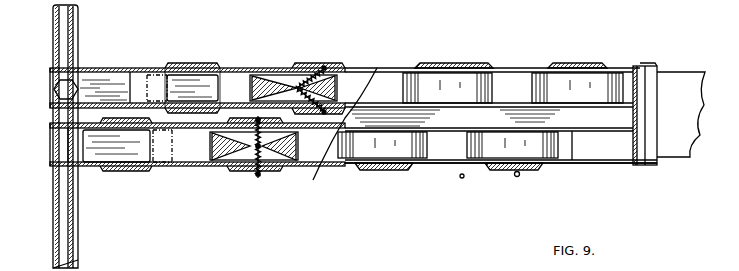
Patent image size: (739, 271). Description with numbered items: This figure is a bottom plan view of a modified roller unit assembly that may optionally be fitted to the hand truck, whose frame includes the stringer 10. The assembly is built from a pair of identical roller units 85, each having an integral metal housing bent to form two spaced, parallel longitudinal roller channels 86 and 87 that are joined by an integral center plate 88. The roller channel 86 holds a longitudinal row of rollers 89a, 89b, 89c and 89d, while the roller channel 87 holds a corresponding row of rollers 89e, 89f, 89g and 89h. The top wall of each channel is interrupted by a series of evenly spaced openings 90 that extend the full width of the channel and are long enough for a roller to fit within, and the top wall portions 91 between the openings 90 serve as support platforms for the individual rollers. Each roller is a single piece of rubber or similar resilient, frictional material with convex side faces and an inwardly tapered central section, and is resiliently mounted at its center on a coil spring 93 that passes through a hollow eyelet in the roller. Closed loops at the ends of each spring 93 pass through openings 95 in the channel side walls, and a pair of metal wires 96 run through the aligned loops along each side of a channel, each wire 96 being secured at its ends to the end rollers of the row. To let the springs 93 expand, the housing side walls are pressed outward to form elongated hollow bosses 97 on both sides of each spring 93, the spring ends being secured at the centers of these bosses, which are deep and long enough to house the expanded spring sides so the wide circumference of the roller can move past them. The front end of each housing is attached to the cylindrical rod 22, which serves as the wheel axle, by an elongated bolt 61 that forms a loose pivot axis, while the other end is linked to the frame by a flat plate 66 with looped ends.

The cylindrical rod 22 is at (57, 233).
The elongated bolt 61 is at (57, 90).
The flat plate 66 is at (690, 128).
The roller unit 85 is at (625, 152).
The roller channel 86 is at (516, 82).
The roller channel 87 is at (611, 156).
The center plate 88 is at (640, 115).
The roller 89a is at (157, 78).
The roller 89b is at (262, 72).
The roller 89c is at (416, 78).
The roller 89d is at (606, 78).
The roller 89e is at (167, 150).
The roller 89f is at (215, 152).
The roller 89g is at (372, 152).
The roller 89h is at (548, 162).
The opening 90 is at (140, 75).
The top wall portion 91 is at (188, 80).
The coil spring 93 is at (302, 76).
The opening 95 is at (262, 178).
The metal wire 96 is at (475, 65).
The hollow boss 97 is at (585, 63).
The stringer 10 is at (449, 45).